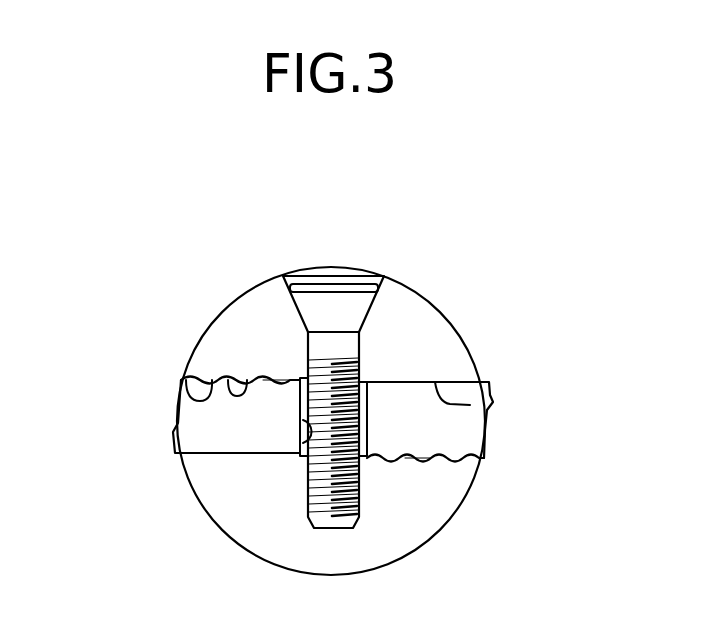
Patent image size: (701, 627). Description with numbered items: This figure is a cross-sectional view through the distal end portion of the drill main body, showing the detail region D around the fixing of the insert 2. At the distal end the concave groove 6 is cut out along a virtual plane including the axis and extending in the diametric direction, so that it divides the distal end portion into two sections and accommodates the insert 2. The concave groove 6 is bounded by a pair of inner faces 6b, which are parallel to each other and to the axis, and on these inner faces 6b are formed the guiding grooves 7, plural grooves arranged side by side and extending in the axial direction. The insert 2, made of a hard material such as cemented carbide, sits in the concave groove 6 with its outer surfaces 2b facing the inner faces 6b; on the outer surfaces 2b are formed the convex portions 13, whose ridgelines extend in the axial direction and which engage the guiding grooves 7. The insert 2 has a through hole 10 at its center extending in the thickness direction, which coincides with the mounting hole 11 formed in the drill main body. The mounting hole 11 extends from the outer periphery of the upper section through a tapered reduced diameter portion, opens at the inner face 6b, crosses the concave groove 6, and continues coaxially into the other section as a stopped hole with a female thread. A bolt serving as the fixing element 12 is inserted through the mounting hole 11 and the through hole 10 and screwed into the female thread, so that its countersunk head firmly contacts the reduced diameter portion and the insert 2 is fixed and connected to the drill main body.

The detail region D is at (231, 222).
The insert 2 is at (343, 410).
The outer surfaces of the insert 2b is at (228, 377).
The concave groove 6 is at (345, 466).
The inner faces of the concave groove 6b is at (177, 387).
The guiding grooves 7 is at (263, 377).
The through hole 10 is at (303, 455).
The mounting hole 11 is at (306, 360).
The fixing element 12 is at (352, 352).
The convex portions 13 is at (278, 377).